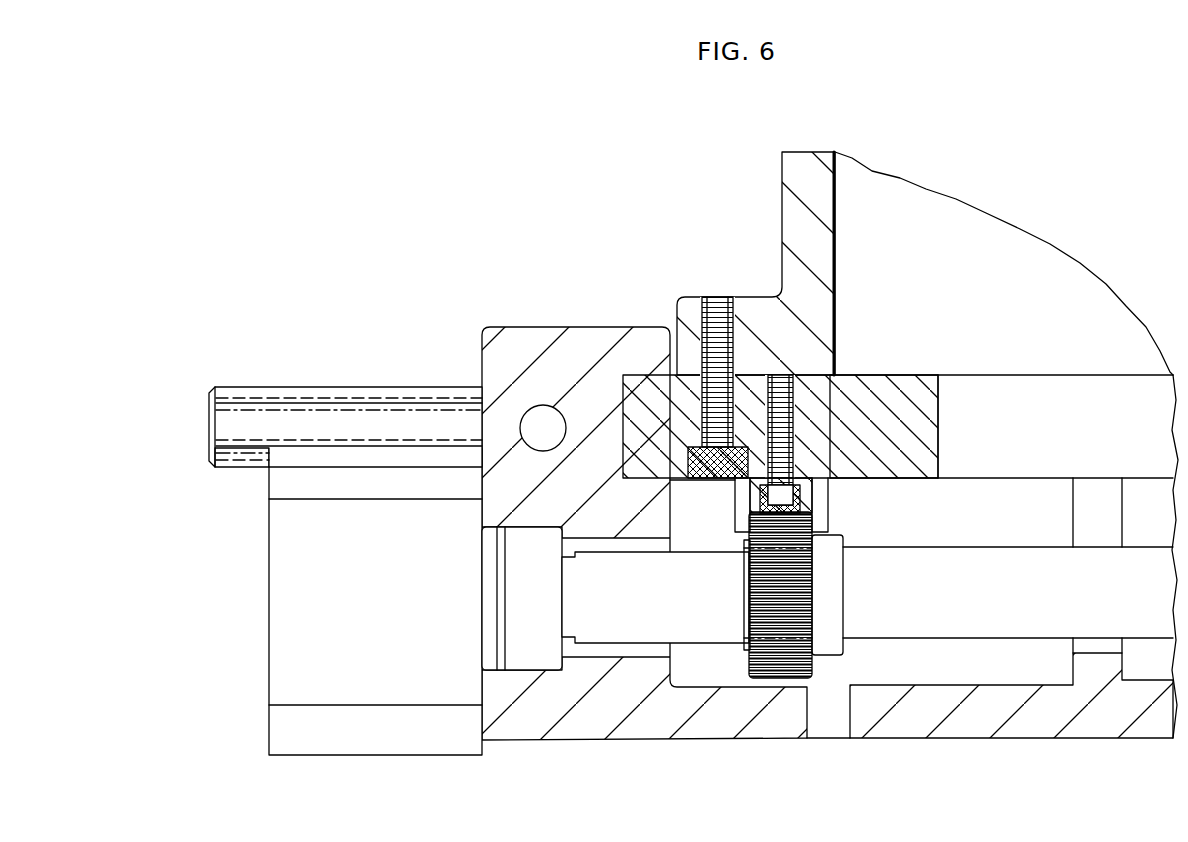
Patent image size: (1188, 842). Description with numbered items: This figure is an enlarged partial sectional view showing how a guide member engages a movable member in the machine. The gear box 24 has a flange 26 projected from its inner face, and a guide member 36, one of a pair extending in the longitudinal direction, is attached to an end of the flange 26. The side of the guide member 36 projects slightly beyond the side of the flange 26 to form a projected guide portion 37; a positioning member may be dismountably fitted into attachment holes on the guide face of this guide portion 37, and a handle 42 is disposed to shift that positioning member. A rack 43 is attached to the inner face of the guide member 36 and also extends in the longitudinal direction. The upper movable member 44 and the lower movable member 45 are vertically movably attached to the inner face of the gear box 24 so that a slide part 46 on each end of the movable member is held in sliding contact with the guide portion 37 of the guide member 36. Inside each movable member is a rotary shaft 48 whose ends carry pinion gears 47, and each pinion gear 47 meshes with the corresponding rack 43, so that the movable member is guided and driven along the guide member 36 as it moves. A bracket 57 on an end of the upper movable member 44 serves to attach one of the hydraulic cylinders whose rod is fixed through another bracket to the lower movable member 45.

The gear box 24 is at (991, 215).
The flange 26 is at (767, 300).
The guide member 36 is at (893, 386).
The guide portion 37 is at (630, 417).
The handle 42 is at (337, 393).
The rack 43 is at (813, 500).
The upper movable member 44 is at (990, 712).
The lower movable member 45 is at (981, 727).
The slide part 46 is at (612, 331).
The pinion gear 47 is at (812, 599).
The rotary shaft 48 is at (1000, 558).
The bracket 57 is at (273, 598).